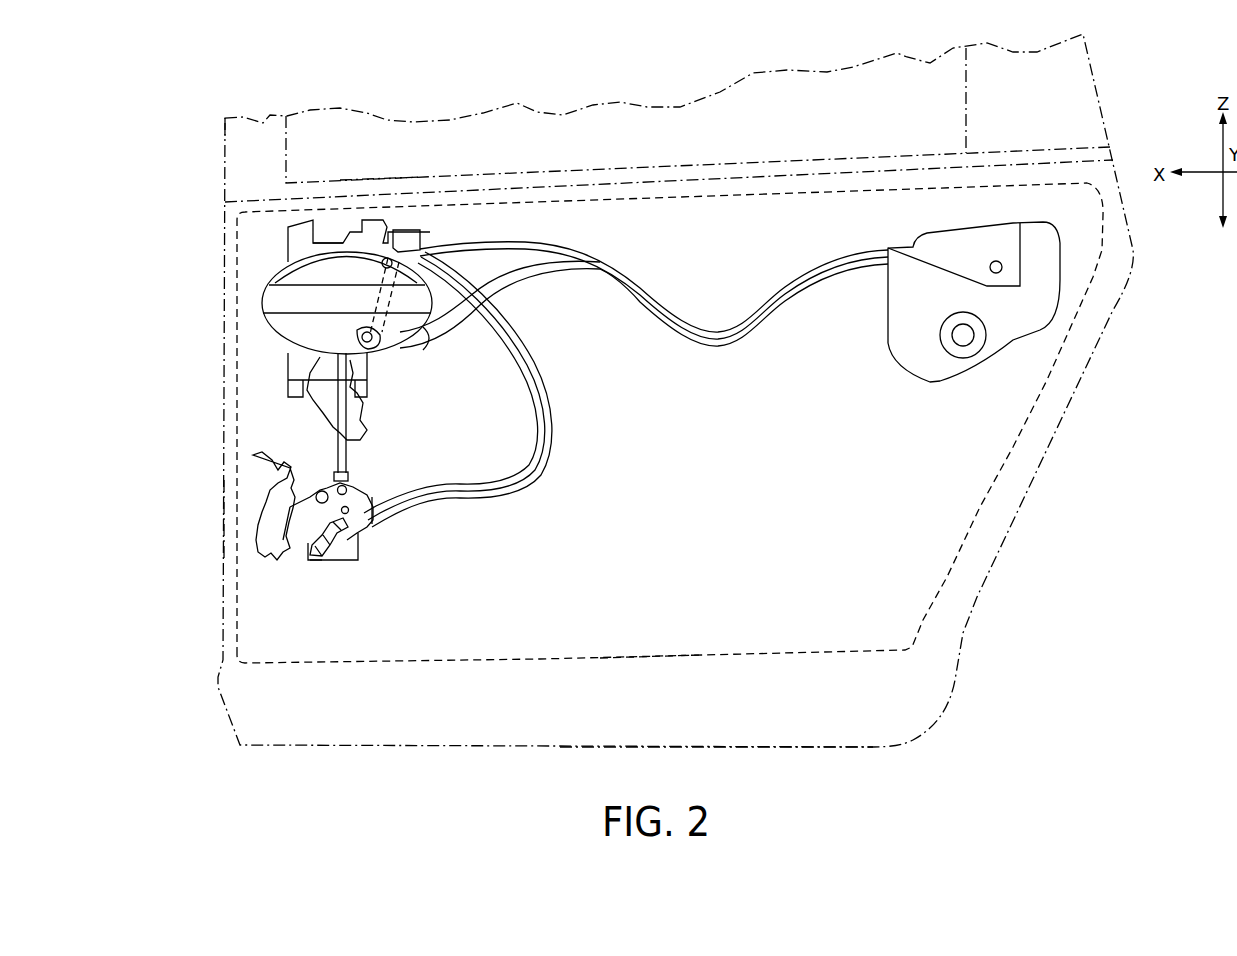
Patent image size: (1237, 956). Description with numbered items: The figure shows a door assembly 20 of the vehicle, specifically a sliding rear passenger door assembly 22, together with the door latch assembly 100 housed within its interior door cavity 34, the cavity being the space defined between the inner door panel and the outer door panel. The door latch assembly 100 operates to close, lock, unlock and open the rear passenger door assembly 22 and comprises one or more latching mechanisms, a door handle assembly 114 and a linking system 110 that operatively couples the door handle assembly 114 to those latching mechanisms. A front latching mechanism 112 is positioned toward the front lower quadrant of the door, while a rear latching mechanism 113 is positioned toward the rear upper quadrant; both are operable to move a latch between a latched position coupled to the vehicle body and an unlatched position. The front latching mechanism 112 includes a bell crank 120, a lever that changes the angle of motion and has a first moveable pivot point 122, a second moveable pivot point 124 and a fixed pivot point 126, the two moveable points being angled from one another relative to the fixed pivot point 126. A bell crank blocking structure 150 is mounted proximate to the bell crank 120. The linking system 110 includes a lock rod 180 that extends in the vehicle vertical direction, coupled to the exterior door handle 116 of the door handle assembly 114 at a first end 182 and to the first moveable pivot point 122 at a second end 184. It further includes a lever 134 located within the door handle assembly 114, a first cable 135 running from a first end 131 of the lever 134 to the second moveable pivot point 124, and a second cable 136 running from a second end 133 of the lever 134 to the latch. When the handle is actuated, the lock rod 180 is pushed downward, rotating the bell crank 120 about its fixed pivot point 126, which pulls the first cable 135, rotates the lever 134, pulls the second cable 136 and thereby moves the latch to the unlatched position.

The door assembly 20 is at (632, 419).
The rear passenger door assembly 22 is at (807, 748).
The interior door cavity 34 is at (235, 356).
The door latch assembly 100 is at (173, 124).
The linking system 110 is at (650, 590).
The front latching mechanism 112 is at (190, 520).
The rear latching mechanism 113 is at (1063, 254).
The door handle assembly 114 is at (380, 166).
The exterior door handle 116 is at (268, 286).
The bell crank 120 is at (358, 486).
The first moveable pivot point 122 is at (370, 518).
The second moveable pivot point 124 is at (353, 542).
The fixed pivot point 126 is at (283, 540).
The first end of the lever 131 is at (408, 248).
The second end of the lever 133 is at (362, 333).
The lever 134 is at (258, 212).
The first cable 135 is at (527, 356).
The second cable 136 is at (527, 437).
The bell crank blocking structure 150 is at (338, 611).
The lock rod 180 is at (348, 451).
The first end of the lock rod 182 is at (323, 390).
The second end of the lock rod 184 is at (337, 480).